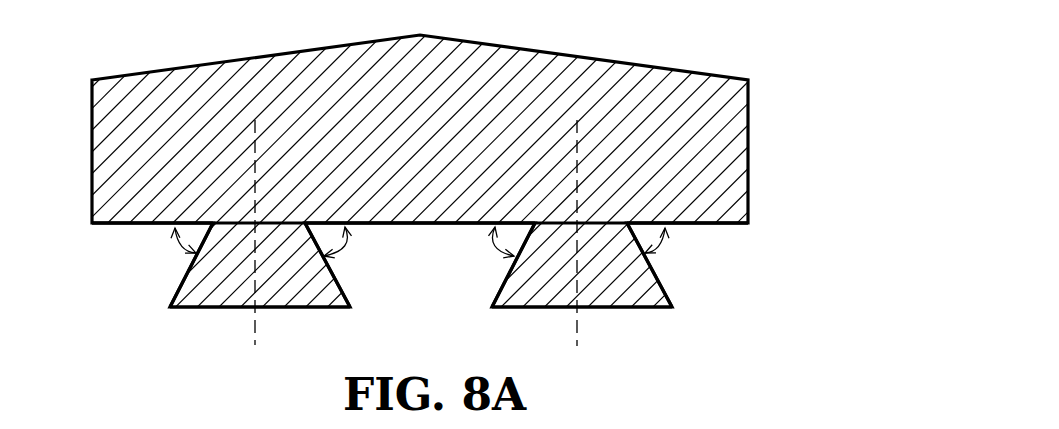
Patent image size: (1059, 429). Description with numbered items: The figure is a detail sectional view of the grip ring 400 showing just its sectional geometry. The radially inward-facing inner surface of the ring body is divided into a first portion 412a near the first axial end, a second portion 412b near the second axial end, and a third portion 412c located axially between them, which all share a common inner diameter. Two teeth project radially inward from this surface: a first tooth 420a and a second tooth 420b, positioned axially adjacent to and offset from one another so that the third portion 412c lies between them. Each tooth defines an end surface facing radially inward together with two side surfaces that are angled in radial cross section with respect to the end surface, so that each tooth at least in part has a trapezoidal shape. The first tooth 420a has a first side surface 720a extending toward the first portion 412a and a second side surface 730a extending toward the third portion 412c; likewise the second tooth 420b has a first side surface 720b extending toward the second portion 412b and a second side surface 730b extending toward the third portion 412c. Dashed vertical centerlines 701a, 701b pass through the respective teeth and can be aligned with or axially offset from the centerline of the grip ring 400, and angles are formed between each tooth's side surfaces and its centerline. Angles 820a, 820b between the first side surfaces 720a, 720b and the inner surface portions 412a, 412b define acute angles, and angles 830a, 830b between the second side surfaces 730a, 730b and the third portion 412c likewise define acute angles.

The grip ring 400 is at (628, 36).
The first portion 412a is at (718, 228).
The second portion 412b is at (118, 226).
The third portion 412c is at (390, 232).
The first tooth 420a is at (548, 310).
The second tooth 420b is at (210, 310).
The vertical centerline 701a is at (580, 198).
The vertical centerline 701b is at (257, 182).
The first side surface 720a is at (675, 286).
The first side surface 720b is at (176, 290).
The second side surface 730a is at (503, 280).
The second side surface 730b is at (345, 269).
The angle 820a is at (663, 245).
The angle 820b is at (177, 245).
The angle 830a is at (485, 245).
The angle 830b is at (355, 245).